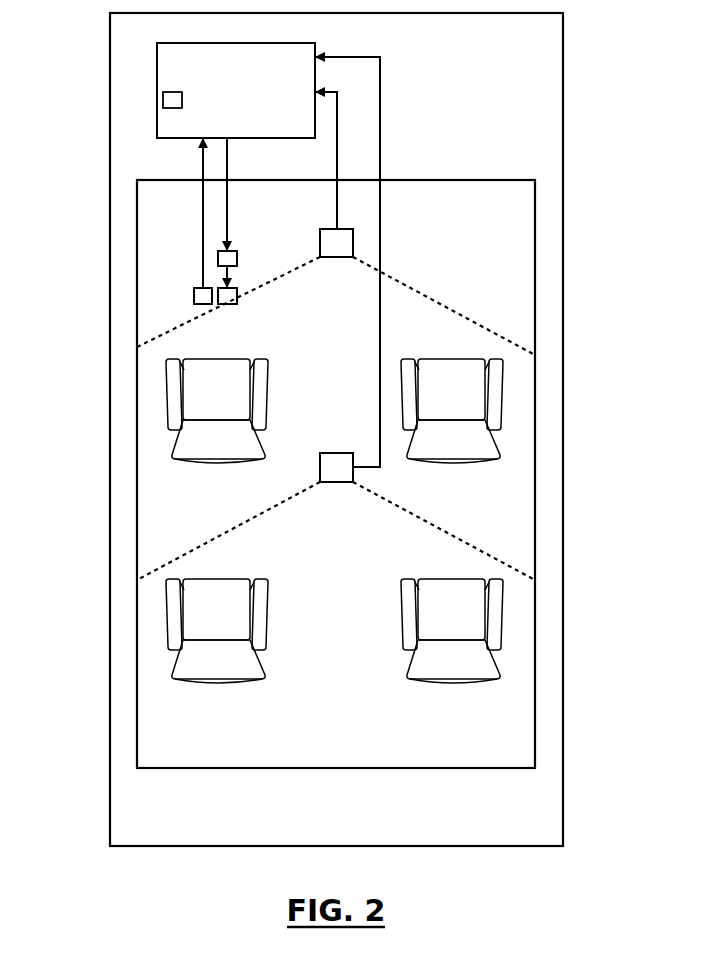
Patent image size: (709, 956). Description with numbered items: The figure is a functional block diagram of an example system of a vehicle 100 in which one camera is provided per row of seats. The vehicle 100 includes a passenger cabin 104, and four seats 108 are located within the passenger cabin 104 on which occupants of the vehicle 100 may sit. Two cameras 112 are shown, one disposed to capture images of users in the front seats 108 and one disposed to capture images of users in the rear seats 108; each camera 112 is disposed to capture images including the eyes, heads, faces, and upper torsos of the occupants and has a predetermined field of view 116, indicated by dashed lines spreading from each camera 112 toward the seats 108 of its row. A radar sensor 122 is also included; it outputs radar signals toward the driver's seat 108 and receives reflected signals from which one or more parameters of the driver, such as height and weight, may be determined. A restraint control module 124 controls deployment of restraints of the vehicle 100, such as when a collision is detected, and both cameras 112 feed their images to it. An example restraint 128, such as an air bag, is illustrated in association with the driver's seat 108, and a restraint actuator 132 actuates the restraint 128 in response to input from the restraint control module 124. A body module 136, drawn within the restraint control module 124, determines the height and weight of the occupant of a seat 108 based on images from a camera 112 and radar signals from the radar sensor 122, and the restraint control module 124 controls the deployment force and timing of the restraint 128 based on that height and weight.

The vehicle 100 is at (563, 165).
The passenger cabin 104 is at (535, 327).
The seats 108 is at (176, 444).
The camera 112 is at (323, 230).
The field of view 116 is at (422, 298).
The radar sensor 122 is at (194, 290).
The restraint control module 124 is at (273, 140).
The restraint 128 is at (238, 289).
The restraint actuator 132 is at (237, 252).
The body module 136 is at (157, 98).